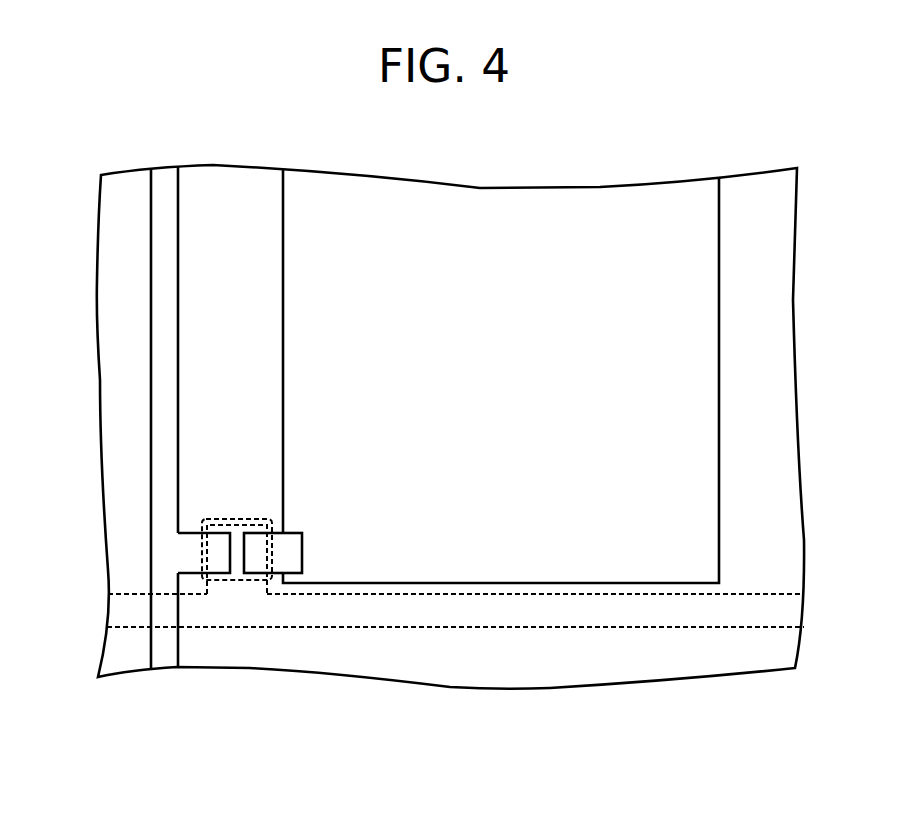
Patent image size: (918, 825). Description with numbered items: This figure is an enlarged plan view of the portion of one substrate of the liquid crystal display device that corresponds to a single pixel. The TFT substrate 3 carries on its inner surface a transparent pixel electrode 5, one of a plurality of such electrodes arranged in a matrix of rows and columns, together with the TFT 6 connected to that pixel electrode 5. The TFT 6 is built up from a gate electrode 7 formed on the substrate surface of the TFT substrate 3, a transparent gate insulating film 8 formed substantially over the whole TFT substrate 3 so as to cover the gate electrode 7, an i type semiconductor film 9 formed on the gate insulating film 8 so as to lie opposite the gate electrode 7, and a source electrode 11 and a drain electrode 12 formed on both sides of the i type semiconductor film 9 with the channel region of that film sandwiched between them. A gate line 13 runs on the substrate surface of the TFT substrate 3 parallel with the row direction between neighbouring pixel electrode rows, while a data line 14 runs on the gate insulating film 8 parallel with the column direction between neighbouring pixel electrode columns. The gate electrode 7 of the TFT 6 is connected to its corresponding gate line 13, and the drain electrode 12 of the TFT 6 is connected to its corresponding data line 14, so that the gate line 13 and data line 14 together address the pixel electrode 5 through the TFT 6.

The TFT substrate 3 is at (763, 168).
The pixel electrode 5 is at (553, 197).
The TFT 6 is at (234, 512).
The gate electrode 7 is at (255, 517).
The gate insulating film 8 is at (212, 657).
The i type semiconductor film 9 is at (250, 580).
The source electrode 11 is at (292, 557).
The drain electrode 12 is at (185, 560).
The gate line 13 is at (550, 615).
The data line 14 is at (162, 392).